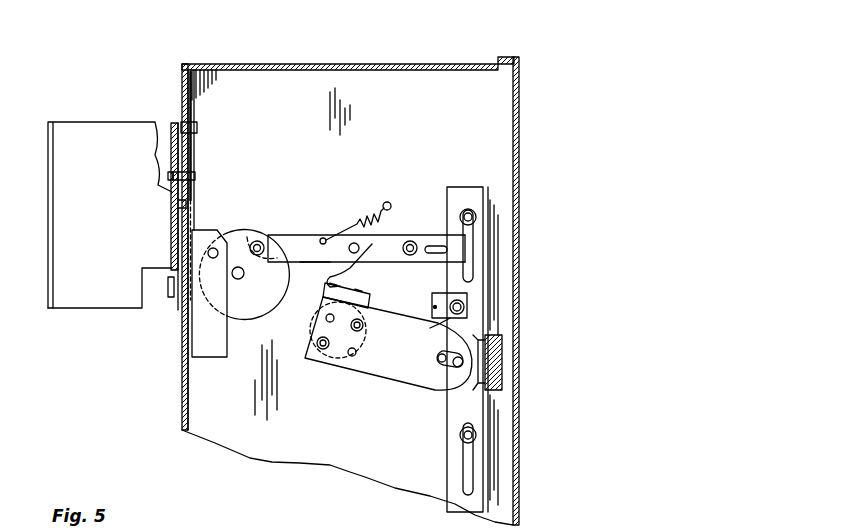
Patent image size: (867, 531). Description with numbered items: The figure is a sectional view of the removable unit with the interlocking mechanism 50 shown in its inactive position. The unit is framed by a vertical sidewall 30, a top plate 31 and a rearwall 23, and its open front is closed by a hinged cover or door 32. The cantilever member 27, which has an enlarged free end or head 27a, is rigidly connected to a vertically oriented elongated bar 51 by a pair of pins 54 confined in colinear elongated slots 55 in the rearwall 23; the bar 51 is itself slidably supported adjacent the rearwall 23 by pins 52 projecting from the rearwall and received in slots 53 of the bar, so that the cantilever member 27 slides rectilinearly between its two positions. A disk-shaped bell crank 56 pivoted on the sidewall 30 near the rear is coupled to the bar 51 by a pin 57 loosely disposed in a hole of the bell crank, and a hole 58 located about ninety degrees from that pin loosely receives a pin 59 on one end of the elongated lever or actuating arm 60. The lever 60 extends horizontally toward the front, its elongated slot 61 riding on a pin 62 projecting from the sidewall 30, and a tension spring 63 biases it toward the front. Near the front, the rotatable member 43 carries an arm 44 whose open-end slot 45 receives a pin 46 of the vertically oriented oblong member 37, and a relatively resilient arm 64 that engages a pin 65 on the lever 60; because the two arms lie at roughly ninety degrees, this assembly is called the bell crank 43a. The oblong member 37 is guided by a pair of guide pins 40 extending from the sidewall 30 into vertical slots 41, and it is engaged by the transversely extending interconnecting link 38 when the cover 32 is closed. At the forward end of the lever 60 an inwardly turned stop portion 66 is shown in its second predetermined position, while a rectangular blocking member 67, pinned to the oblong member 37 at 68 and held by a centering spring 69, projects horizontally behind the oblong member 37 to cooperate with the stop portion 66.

The rearwall 23 is at (182, 80).
The cantilever member 27 is at (118, 122).
The enlarged free end or head 27a is at (94, 310).
The sidewall 30 is at (320, 461).
The top plate 31 is at (448, 64).
The cover or door 32 is at (513, 386).
The oblong member 37 is at (462, 188).
The interconnecting link 38 is at (503, 359).
The guide pins 40 is at (475, 218).
The vertical slots 41 is at (470, 270).
The rotatable member 43 is at (340, 362).
The bell crank 43a is at (320, 298).
The arm 44 is at (366, 376).
The open-end slot 45 is at (438, 357).
The pin 46 is at (457, 367).
The interlocking mechanism 50 is at (318, 217).
The elongated bar 51 is at (200, 71).
The pins 52 is at (198, 127).
The slots 53 is at (193, 118).
The pins 54 is at (197, 177).
The elongated slots 55 is at (185, 204).
The bell crank 56 is at (243, 318).
The pin 57 is at (213, 258).
The hole 58 is at (250, 240).
The pin 59 is at (260, 243).
The lever or actuating arm 60 is at (312, 262).
The elongated slot 61 is at (432, 242).
The pin 62 is at (410, 257).
The tension spring 63 is at (357, 226).
The resilient arm 64 is at (350, 269).
The pin 65 is at (362, 245).
The stop portion 66 is at (465, 251).
The blocking member 67 is at (432, 295).
The pin 68 is at (432, 329).
The centering spring 69 is at (450, 309).